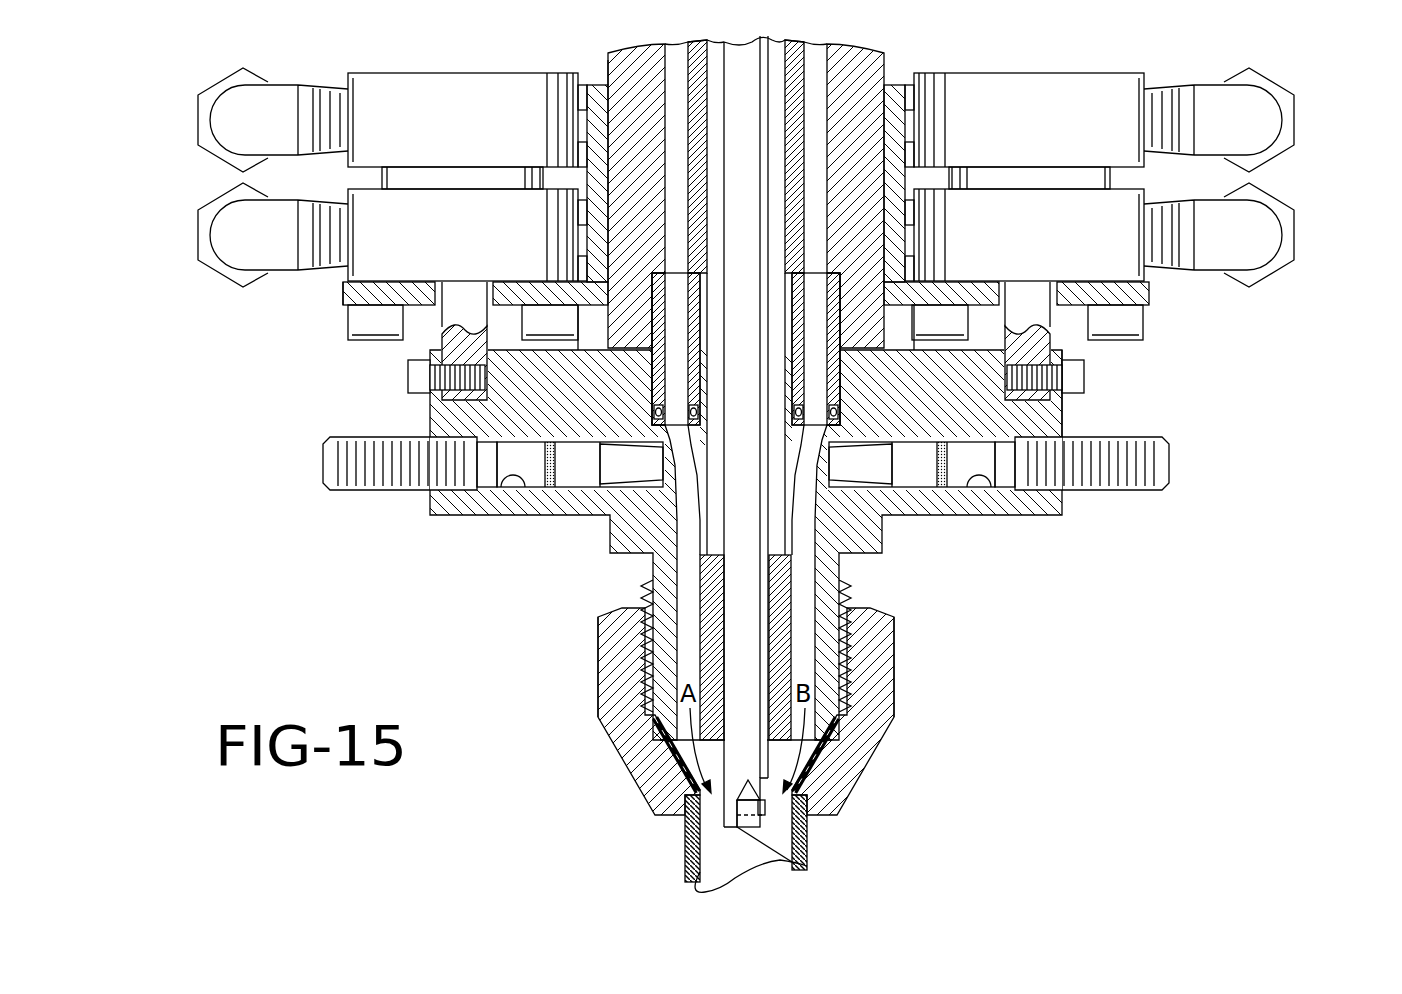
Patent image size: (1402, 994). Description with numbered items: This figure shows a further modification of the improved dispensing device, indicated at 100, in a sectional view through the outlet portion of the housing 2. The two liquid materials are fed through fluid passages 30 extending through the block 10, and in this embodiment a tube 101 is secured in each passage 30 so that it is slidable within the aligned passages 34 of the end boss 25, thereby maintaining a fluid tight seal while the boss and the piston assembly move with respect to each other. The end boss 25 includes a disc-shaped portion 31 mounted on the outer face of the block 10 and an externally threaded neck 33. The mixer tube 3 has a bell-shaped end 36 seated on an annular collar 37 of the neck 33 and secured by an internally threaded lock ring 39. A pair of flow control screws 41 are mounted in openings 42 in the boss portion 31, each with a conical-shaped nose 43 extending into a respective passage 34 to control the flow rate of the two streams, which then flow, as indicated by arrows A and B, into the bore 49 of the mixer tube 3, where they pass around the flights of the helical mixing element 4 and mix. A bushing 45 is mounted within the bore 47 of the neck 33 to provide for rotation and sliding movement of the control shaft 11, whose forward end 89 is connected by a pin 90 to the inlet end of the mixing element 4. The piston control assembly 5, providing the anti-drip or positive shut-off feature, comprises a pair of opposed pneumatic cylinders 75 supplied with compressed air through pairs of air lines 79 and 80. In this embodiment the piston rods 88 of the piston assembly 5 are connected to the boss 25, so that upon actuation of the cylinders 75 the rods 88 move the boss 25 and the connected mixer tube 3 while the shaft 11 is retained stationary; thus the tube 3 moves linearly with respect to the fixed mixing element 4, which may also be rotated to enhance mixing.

The housing 2 is at (606, 70).
The mixer tube 3 is at (690, 868).
The mixing element 4 is at (728, 853).
The piston control assembly 5 is at (322, 298).
The block 10 is at (878, 64).
The control shaft 11 is at (750, 147).
The end boss 25 is at (457, 530).
The fluid passage 30 is at (672, 222).
The disc-shaped portion 31 is at (1025, 523).
The externally threaded neck 33 is at (880, 642).
The fluid passage 34 is at (690, 645).
The bell-shaped end 36 is at (800, 790).
The annular collar 37 is at (815, 738).
The lock ring 39 is at (890, 722).
The flow control screw 41 is at (357, 432).
The opening 42 is at (515, 480).
The conical-shaped nose 43 is at (636, 468).
The bushing 45 is at (775, 582).
The bore 47 is at (720, 538).
The bore 49 is at (705, 892).
The pneumatic cylinder 75 is at (461, 87).
The air line 79 is at (219, 236).
The air line 80 is at (219, 126).
The piston rod 88 is at (450, 338).
The forward end 89 is at (722, 805).
The pin 90 is at (765, 815).
The modified dispensing device 100 is at (1097, 648).
The tube 101 is at (662, 292).